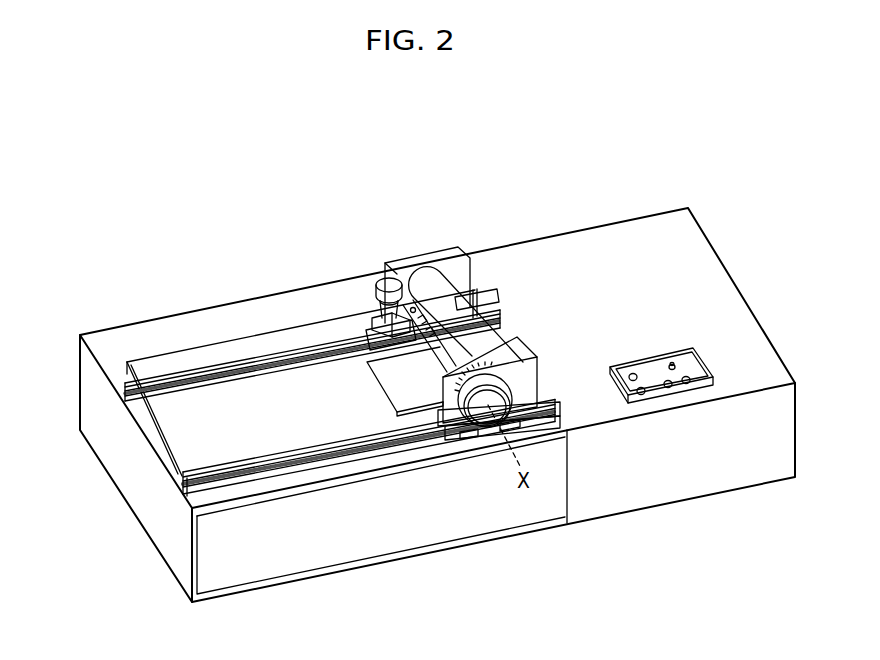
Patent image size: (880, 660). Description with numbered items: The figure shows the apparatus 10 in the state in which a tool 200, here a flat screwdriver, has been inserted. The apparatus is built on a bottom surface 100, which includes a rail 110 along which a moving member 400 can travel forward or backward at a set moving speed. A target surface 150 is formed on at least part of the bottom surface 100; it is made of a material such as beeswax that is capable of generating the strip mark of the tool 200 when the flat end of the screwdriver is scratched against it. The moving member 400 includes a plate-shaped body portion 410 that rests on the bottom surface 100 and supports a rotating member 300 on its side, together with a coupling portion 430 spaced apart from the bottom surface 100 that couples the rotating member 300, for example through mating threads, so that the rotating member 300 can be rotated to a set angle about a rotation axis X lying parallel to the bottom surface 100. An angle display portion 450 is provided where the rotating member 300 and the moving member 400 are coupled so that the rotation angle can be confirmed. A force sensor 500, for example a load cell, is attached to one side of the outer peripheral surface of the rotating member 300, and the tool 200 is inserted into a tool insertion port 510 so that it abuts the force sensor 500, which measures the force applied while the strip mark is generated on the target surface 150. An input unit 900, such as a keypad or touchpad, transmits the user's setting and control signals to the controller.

The cutting apparatus 10 is at (669, 118).
The bottom surface 100 is at (190, 442).
The rail 110 is at (188, 483).
The target surface 150 is at (397, 387).
The tool 200 is at (383, 277).
The rotating member 300 is at (428, 292).
The moving member 400 is at (445, 257).
The body portion 410 is at (528, 387).
The coupling portion 430 is at (512, 362).
The angle display portion 450 is at (486, 372).
The force sensor 500 is at (372, 335).
The tool insertion port 510 is at (377, 310).
The input unit 900 is at (680, 350).